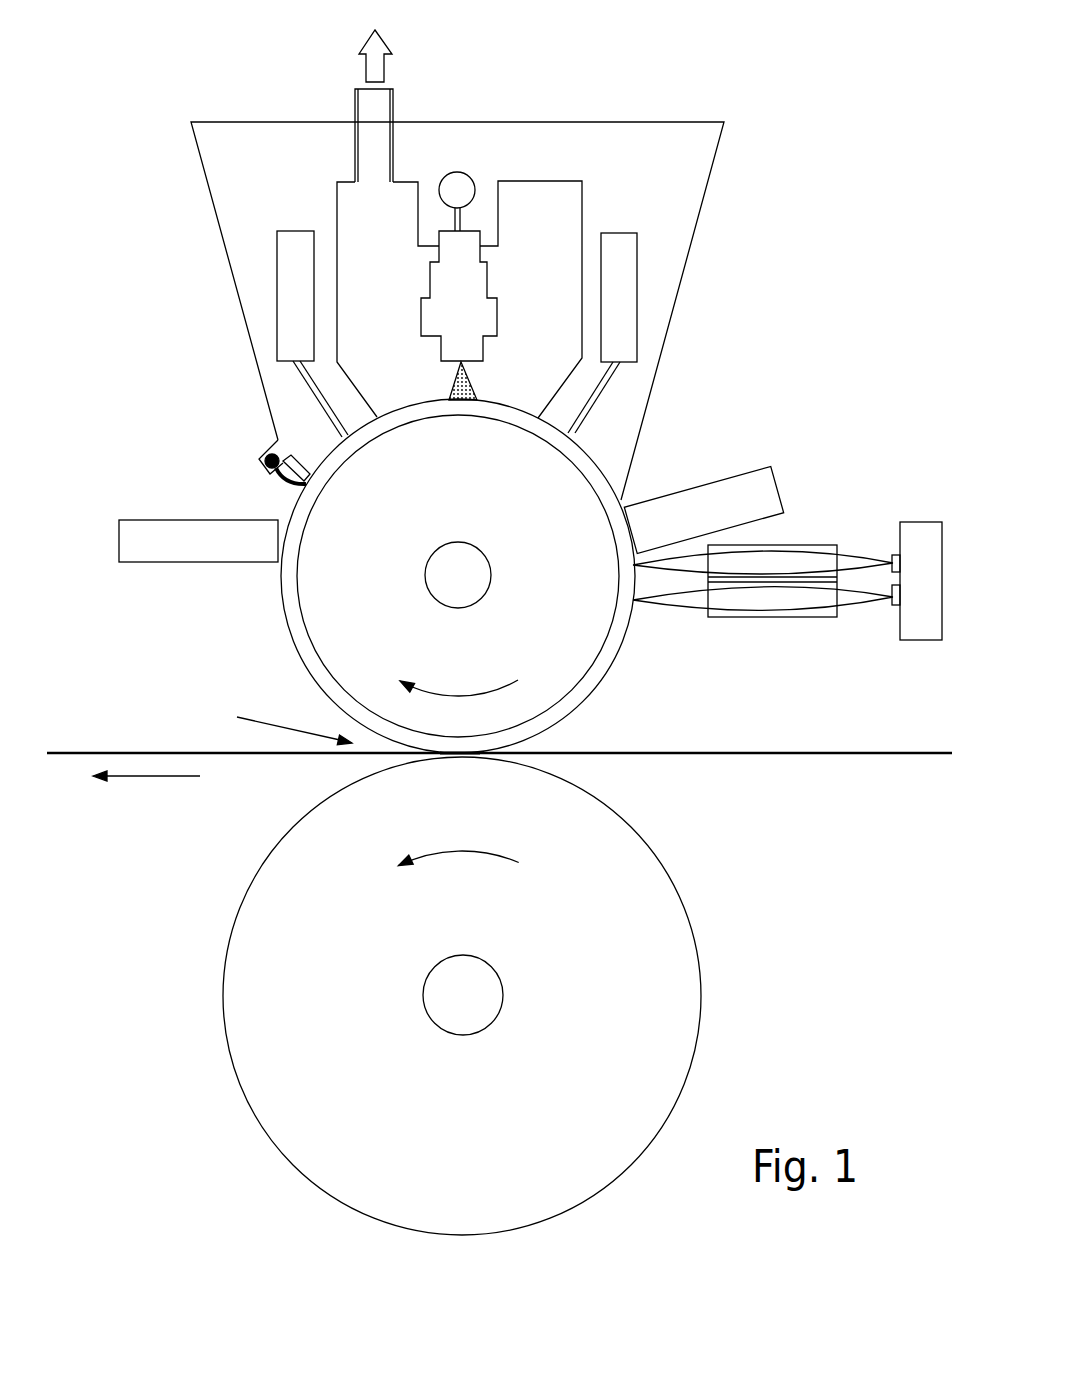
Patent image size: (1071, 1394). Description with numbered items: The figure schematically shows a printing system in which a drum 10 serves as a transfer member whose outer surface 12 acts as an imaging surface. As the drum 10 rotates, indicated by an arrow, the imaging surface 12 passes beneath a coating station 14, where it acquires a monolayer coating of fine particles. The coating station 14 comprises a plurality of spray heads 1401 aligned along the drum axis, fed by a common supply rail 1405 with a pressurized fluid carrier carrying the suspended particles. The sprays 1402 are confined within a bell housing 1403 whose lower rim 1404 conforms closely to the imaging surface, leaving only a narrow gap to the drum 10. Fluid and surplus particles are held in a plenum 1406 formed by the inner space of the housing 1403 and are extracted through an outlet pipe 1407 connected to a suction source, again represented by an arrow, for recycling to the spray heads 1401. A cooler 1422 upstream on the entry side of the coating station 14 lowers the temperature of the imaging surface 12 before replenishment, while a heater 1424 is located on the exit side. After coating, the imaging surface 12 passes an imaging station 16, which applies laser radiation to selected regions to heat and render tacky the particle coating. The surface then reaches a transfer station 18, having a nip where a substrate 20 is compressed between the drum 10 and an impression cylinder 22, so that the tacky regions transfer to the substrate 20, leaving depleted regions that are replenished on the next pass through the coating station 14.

The drum 10 is at (327, 633).
The outer surface 12 is at (298, 657).
The coating station 14 is at (666, 95).
The imaging station 16 is at (893, 487).
The transfer station 18 is at (338, 725).
The substrate 20 is at (703, 753).
The impression cylinder 22 is at (652, 1030).
The spray heads 1401 is at (478, 310).
The sprays 1402 is at (465, 393).
The bell housing 1403 is at (527, 137).
The lower rim 1404 is at (330, 443).
The common supply rail 1405 is at (457, 186).
The plenum 1406 is at (367, 225).
The outlet pipe 1407 is at (355, 108).
The cooler 1422 is at (135, 535).
The heater 1424 is at (757, 472).